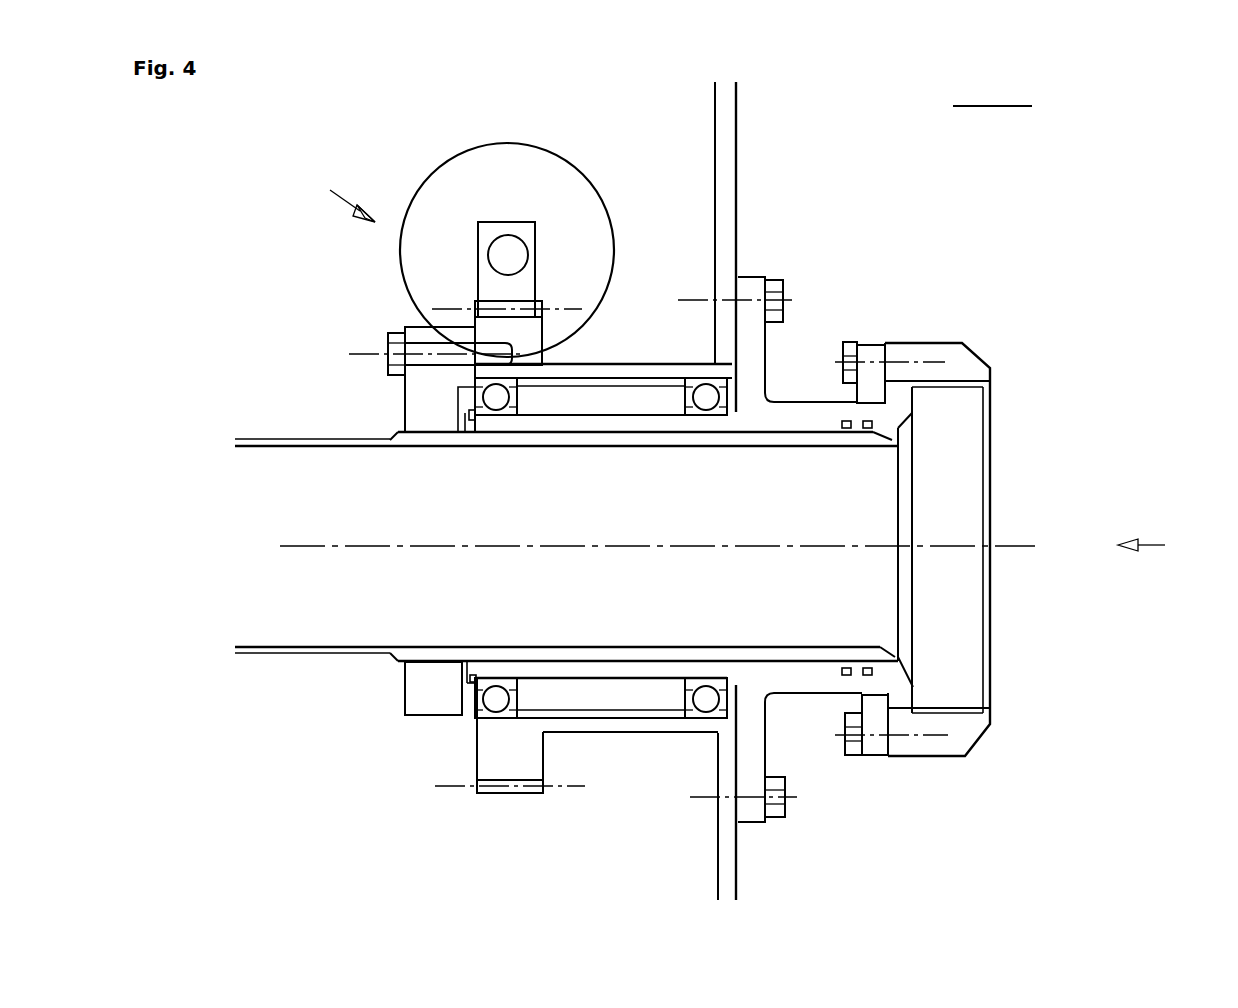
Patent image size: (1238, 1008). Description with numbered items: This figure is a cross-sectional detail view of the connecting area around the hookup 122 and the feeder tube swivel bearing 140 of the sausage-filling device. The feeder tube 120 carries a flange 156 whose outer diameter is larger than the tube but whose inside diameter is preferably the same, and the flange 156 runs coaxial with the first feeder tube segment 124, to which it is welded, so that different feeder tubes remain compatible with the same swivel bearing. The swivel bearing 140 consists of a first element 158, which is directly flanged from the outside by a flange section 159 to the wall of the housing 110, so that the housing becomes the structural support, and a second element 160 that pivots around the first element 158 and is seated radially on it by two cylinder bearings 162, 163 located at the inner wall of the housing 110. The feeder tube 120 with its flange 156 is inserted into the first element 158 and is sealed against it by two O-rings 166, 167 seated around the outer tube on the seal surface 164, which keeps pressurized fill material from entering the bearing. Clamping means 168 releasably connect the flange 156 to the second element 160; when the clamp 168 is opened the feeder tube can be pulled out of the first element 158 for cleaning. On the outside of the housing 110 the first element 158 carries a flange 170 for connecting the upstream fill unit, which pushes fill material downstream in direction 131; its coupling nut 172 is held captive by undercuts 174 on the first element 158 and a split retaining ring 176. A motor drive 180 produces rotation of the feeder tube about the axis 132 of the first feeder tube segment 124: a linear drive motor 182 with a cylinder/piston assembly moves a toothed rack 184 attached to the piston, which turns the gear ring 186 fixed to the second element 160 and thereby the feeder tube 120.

The housing 110 is at (738, 132).
The feeder tube 120 is at (268, 400).
The hookup 122 is at (345, 679).
The first feeder tube segment 124 is at (270, 652).
The direction 131 is at (1159, 513).
The axis 132 is at (270, 548).
The feeder tube swivel bearing 140 is at (1046, 33).
The flange 156 is at (473, 442).
The first element 158 is at (612, 670).
The flange section 159 is at (772, 238).
The second element 160 is at (508, 752).
The cylinder bearing 162 is at (500, 702).
The cylinder bearing 163 is at (707, 702).
The seal surface 164 is at (855, 660).
The O-ring 166 is at (870, 428).
The O-ring 167 is at (845, 430).
The clamping means 168 is at (435, 698).
The flange 170 is at (1008, 310).
The coupling nut 172 is at (980, 366).
The undercuts 174 is at (887, 402).
The split retaining ring 176 is at (870, 357).
The motor drive 180 is at (325, 194).
The linear drive motor 182 is at (431, 180).
The toothed rack 184 is at (536, 240).
The gear ring 186 is at (545, 307).